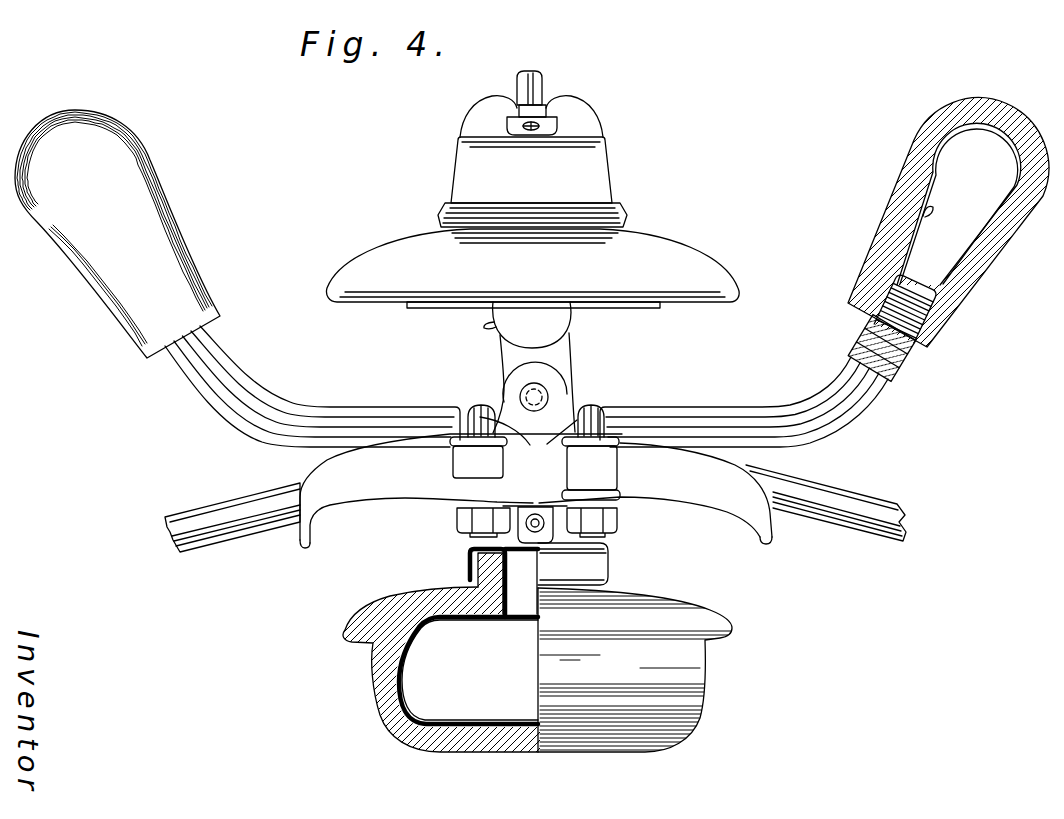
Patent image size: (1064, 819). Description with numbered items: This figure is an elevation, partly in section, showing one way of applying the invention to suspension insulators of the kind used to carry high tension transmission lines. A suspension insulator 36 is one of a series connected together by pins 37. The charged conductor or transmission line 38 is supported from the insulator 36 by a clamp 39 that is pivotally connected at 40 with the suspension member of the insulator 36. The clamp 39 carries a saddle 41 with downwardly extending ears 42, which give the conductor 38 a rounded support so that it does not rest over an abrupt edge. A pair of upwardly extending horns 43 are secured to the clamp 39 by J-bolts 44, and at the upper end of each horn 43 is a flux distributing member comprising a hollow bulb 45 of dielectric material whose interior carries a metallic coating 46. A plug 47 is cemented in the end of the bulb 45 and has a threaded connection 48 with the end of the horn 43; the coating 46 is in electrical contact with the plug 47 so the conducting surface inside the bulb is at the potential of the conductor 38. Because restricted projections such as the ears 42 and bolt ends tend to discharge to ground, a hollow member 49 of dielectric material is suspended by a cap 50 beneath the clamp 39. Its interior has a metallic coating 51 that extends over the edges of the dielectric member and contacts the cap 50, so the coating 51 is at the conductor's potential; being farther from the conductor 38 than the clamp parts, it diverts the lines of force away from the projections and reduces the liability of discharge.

The suspension insulator 36 is at (643, 253).
The pin 37 is at (543, 78).
The conductor 38 is at (186, 517).
The clamp 39 is at (543, 433).
The pivotal connection 40 is at (526, 396).
The saddle 41 is at (370, 497).
The ear 42 is at (305, 551).
The horn 43 is at (281, 426).
The J-bolt 44 is at (535, 471).
The hollow bulb 45 is at (135, 220).
The metallic coating 46 is at (929, 209).
The plug 47 is at (916, 278).
The threaded connection 48 is at (896, 366).
The hollow member 49 is at (377, 685).
The cap 50 is at (580, 565).
The metallic coating 51 is at (410, 697).